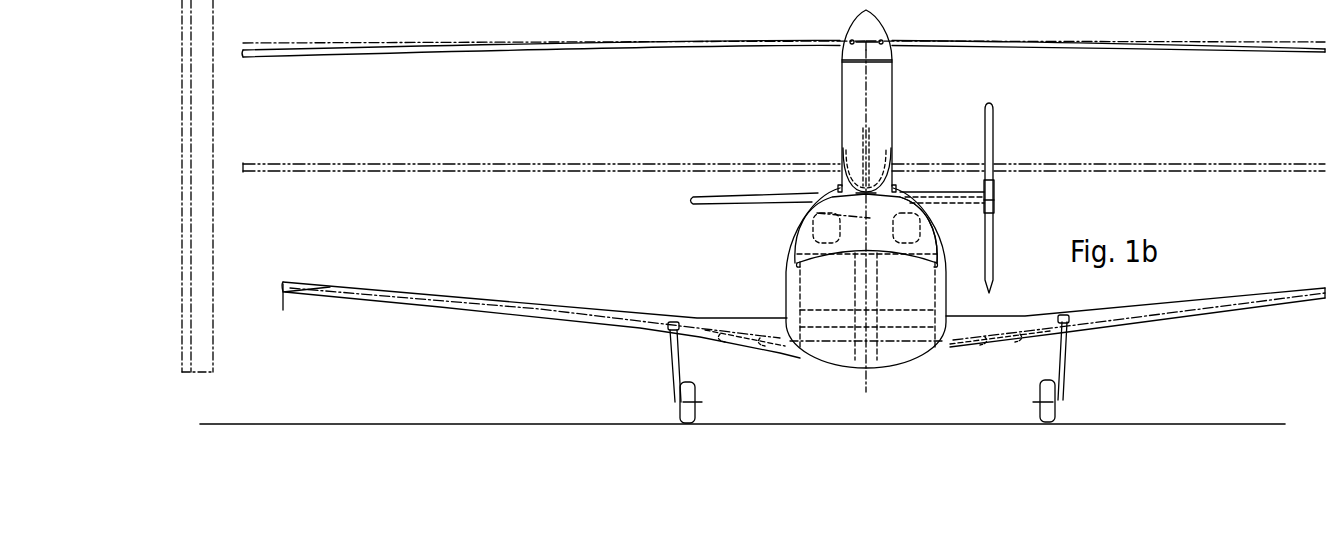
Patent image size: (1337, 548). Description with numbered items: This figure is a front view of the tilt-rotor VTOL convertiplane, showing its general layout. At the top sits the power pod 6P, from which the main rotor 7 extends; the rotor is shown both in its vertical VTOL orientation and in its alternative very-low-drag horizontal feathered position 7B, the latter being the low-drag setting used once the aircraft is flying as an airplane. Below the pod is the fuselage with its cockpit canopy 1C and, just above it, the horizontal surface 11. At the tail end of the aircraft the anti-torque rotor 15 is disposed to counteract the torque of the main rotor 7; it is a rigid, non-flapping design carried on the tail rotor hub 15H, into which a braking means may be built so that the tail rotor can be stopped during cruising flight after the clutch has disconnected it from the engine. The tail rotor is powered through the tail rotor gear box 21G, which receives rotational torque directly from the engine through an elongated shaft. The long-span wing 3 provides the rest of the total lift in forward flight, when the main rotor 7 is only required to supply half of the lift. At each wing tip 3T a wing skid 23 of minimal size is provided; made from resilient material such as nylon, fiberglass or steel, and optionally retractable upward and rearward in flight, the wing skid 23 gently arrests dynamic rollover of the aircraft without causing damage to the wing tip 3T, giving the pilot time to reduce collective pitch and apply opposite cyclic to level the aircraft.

The main rotor 7 is at (818, 32).
The rotor blade (alternate position) 7B is at (608, 50).
The rotor pod / nacelle 6P is at (841, 82).
The anti-torque rotor 15 is at (996, 146).
The tail rotor hub 15H is at (995, 206).
The horizontal tail surface 11 is at (838, 186).
The cockpit canopy 1C is at (815, 215).
The tail rotor gear box 21G is at (938, 218).
The wing 3 is at (646, 310).
The wing tip 3T is at (297, 280).
The wing skid 23 is at (285, 308).